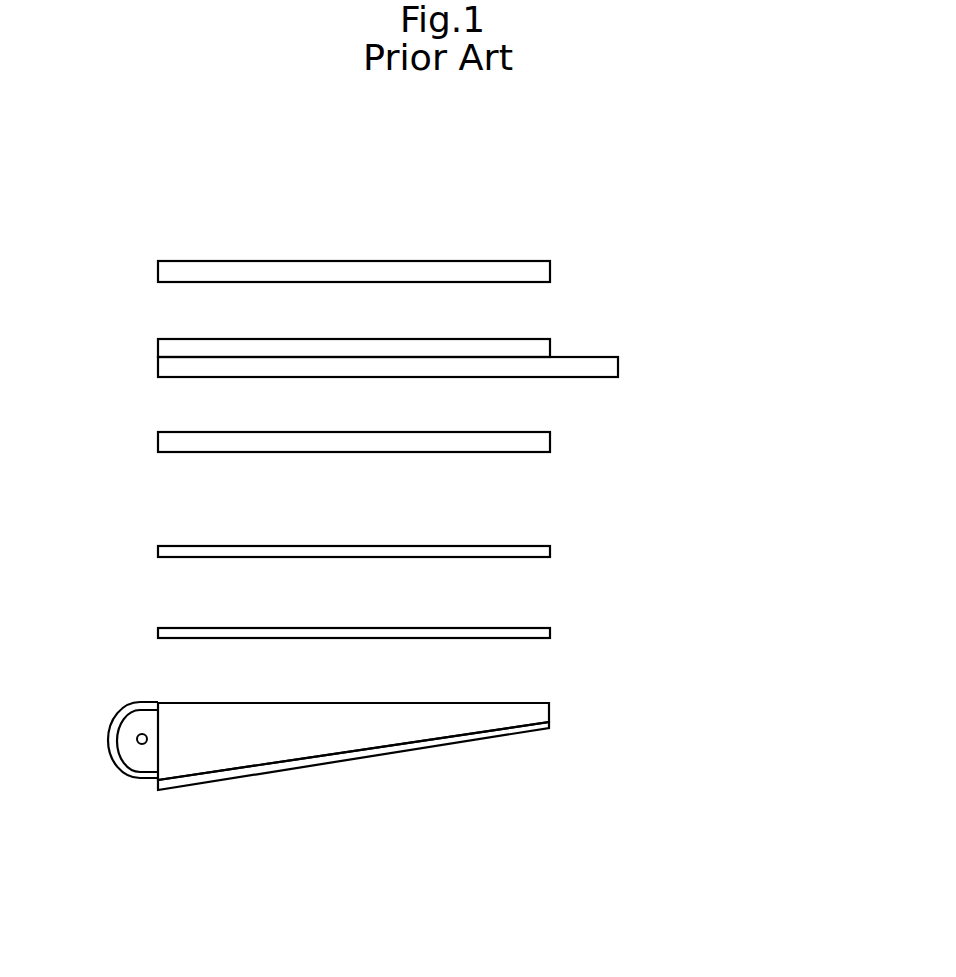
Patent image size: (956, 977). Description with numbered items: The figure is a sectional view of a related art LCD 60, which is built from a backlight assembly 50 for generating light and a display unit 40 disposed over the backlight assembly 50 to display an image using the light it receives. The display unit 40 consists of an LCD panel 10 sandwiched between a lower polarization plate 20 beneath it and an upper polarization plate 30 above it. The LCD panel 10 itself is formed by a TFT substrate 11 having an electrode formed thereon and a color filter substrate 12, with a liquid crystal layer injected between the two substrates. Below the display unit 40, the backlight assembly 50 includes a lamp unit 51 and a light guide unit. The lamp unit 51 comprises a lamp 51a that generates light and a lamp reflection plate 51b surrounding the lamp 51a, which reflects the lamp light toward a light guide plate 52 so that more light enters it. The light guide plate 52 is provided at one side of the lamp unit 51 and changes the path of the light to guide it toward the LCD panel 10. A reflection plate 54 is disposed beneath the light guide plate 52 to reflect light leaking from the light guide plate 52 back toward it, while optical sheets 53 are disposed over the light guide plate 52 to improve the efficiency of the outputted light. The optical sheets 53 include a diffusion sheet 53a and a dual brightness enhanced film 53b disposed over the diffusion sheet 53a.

The LCD 60 is at (528, 207).
The upper polarization plate 30 is at (550, 271).
The LCD panel 10 is at (450, 338).
The color filter substrate 12 is at (550, 350).
The TFT substrate 11 is at (618, 367).
The lower polarization plate 20 is at (550, 441).
The display unit 40 is at (770, 258).
The backlight assembly 50 is at (376, 703).
The optical sheets 53 is at (440, 591).
The dual brightness enhanced film 53b is at (550, 551).
The diffusion sheet 53a is at (550, 631).
The light guide plate 52 is at (549, 707).
The reflection plate 54 is at (549, 725).
The lamp unit 51 is at (94, 786).
The lamp 51a is at (137, 740).
The lamp reflection plate 51b is at (130, 776).